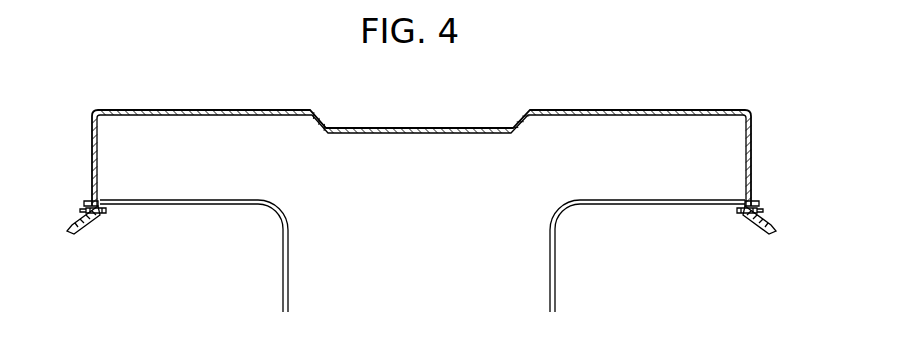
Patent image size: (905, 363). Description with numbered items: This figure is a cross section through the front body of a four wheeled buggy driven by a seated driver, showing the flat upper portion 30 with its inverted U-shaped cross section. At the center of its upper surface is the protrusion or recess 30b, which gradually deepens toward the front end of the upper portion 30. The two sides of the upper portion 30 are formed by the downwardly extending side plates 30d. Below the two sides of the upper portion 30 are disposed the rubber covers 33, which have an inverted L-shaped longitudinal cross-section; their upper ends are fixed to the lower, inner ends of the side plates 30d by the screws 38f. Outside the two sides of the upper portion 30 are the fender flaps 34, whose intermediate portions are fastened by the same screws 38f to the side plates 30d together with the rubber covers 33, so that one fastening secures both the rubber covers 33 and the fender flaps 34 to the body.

The upper portion 30 is at (382, 123).
The protrusion or recess 30b is at (434, 128).
The side plates 30d is at (92, 150).
The screws 38f is at (80, 206).
The fender flaps 34 is at (71, 227).
The rubber covers 33 is at (284, 262).